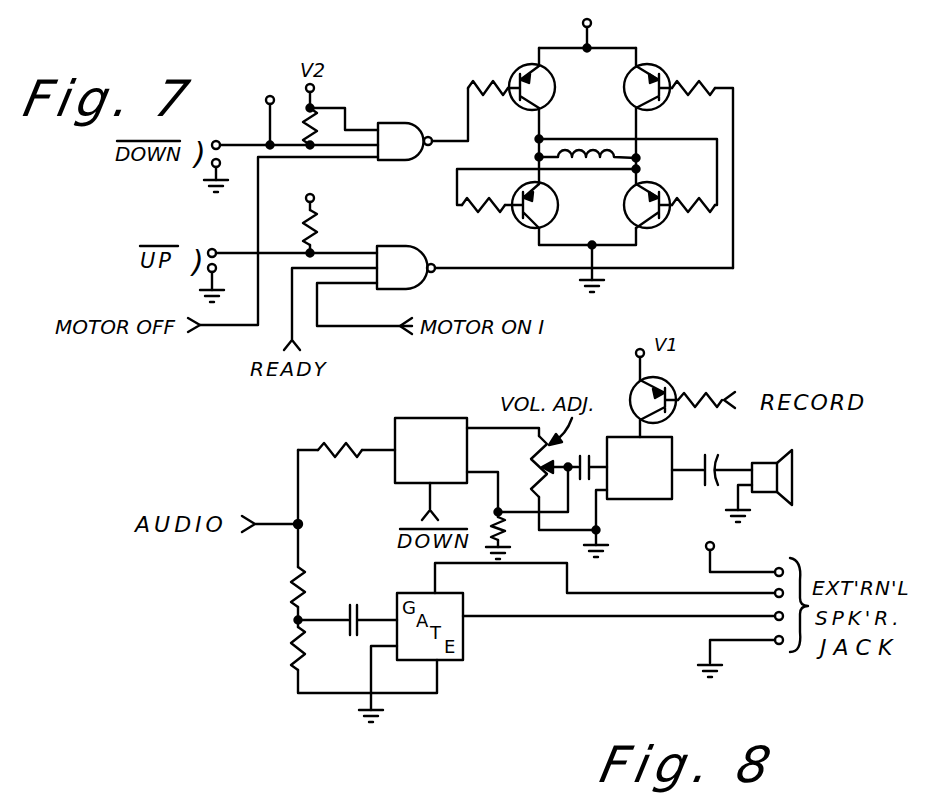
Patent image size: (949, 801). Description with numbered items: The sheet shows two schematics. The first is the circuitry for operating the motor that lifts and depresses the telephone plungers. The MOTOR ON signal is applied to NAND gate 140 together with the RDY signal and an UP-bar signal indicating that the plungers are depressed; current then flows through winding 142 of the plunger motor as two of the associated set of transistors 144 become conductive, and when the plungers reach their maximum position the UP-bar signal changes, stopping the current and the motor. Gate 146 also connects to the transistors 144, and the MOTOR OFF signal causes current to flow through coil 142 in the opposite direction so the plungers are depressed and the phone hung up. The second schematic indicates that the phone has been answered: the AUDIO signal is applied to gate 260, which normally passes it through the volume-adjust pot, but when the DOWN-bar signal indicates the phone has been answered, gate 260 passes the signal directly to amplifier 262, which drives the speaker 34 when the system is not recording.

In FIG. 7, the NAND gate 140 is at (420, 278).
In FIG. 7, the winding 142 is at (617, 153).
In FIG. 7, the set of transistors 144 is at (683, 64).
In FIG. 7, the gate 146 is at (420, 104).
In FIG. 8, the gate 260 is at (452, 398).
In FIG. 8, the amplifier 262 is at (665, 449).
In FIG. 8, the speaker 34 is at (793, 479).